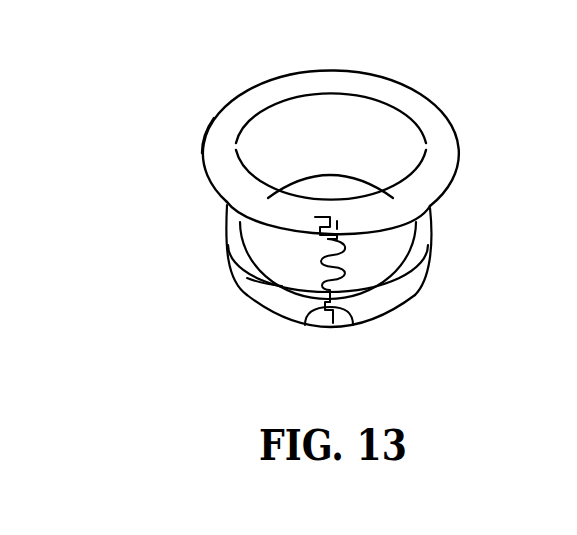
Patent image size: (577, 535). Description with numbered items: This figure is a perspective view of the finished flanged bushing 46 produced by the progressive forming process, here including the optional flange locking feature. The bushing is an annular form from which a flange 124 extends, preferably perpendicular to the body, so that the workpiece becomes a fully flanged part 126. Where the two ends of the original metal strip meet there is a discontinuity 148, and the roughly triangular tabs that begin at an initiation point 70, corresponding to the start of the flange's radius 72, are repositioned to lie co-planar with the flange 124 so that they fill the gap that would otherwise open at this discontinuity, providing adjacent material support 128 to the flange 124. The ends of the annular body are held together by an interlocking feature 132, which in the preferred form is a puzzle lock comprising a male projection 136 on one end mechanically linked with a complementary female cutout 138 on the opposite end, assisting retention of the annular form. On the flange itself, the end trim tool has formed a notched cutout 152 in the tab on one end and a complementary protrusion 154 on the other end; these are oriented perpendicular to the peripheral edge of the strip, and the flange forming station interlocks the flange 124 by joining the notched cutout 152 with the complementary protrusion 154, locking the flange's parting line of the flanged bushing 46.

The flanged bushing 46 is at (470, 75).
The flange 124 is at (364, 72).
The fully flanged part 126 is at (197, 148).
The interlocking feature 132 is at (356, 232).
The initiation point 70 is at (269, 274).
The flange's radius 72 is at (247, 278).
The male projection 136 is at (340, 221).
The female cutout 138 is at (315, 217).
The adjacent material support 128 is at (318, 232).
The discontinuity 148 is at (347, 237).
The notched cutout 152 is at (305, 325).
The complementary protrusion 154 is at (353, 325).